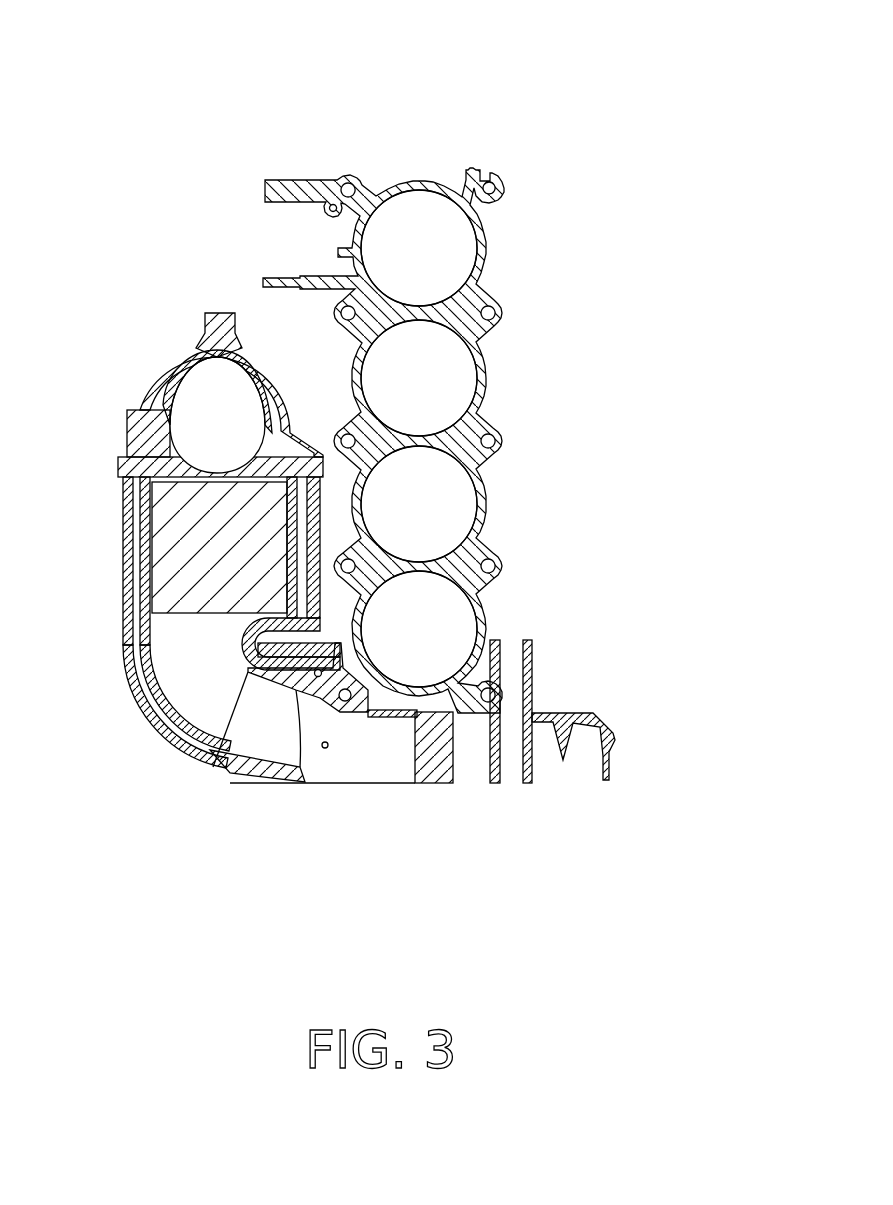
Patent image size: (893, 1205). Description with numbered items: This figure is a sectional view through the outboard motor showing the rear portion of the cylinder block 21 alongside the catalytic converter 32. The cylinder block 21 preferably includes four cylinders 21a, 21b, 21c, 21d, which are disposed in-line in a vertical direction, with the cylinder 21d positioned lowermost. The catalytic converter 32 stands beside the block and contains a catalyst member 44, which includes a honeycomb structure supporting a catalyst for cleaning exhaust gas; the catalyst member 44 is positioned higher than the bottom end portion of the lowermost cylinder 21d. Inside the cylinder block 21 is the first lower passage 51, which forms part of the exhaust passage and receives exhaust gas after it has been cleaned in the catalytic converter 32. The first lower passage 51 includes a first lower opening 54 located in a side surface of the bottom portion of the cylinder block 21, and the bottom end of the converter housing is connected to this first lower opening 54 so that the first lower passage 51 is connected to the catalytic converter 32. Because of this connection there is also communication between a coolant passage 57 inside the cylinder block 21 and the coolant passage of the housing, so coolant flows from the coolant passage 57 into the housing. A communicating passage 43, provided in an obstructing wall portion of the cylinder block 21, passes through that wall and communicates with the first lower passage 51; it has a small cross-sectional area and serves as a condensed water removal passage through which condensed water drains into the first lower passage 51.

The cylinder block 21 is at (409, 132).
The cylinder 21a is at (483, 238).
The cylinder 21b is at (486, 376).
The cylinder 21c is at (486, 505).
The cylinder 21d is at (484, 618).
The catalytic converter 32 is at (127, 378).
The catalyst member 44 is at (183, 543).
The communicating passage 43 is at (325, 749).
The first lower passage 51 is at (373, 760).
The first lower opening 54 is at (233, 706).
The coolant passage 57 is at (287, 660).